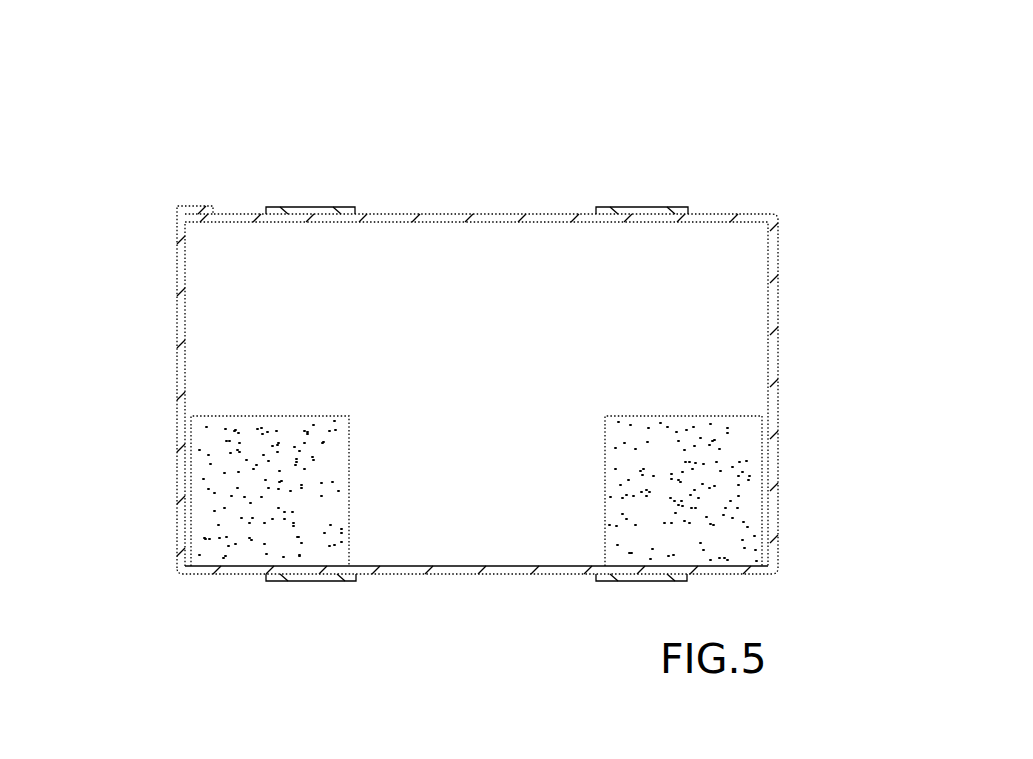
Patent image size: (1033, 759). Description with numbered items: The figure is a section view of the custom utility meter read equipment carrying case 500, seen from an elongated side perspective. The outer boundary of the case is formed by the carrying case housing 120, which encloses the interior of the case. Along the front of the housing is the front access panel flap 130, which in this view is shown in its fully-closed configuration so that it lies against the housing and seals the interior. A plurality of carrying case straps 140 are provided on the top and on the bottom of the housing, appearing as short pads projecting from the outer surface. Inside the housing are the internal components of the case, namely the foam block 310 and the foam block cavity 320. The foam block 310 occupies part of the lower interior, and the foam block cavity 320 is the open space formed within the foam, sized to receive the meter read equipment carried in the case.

The custom utility meter read equipment carrying case 500 is at (170, 132).
The front access panel flap 130 is at (180, 268).
The carrying case housing 120 is at (405, 213).
The carrying case straps 140 is at (351, 208).
The foam block 310 is at (297, 422).
The foam block cavity 320 is at (605, 443).